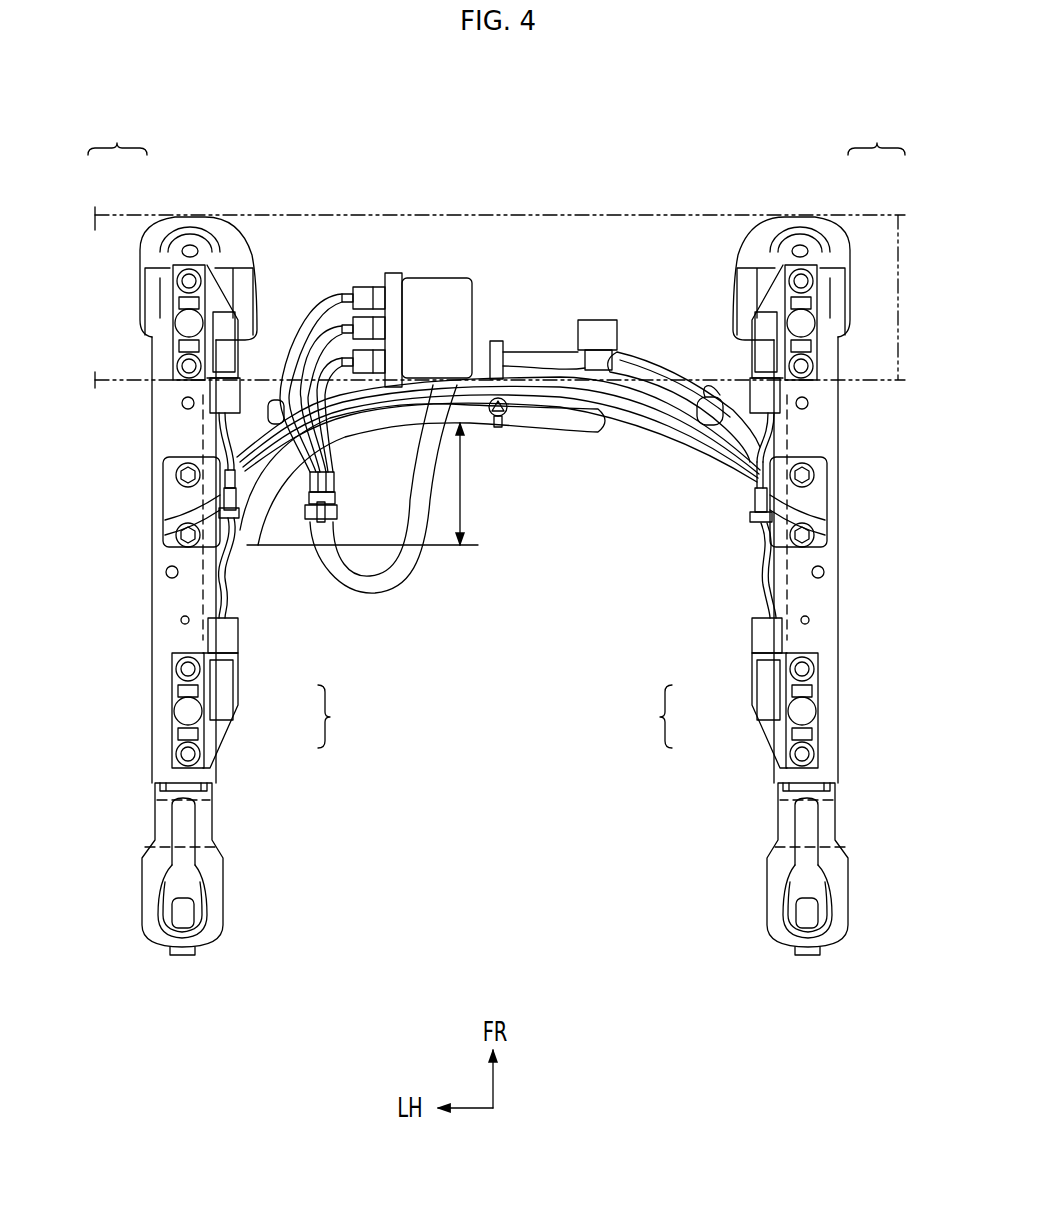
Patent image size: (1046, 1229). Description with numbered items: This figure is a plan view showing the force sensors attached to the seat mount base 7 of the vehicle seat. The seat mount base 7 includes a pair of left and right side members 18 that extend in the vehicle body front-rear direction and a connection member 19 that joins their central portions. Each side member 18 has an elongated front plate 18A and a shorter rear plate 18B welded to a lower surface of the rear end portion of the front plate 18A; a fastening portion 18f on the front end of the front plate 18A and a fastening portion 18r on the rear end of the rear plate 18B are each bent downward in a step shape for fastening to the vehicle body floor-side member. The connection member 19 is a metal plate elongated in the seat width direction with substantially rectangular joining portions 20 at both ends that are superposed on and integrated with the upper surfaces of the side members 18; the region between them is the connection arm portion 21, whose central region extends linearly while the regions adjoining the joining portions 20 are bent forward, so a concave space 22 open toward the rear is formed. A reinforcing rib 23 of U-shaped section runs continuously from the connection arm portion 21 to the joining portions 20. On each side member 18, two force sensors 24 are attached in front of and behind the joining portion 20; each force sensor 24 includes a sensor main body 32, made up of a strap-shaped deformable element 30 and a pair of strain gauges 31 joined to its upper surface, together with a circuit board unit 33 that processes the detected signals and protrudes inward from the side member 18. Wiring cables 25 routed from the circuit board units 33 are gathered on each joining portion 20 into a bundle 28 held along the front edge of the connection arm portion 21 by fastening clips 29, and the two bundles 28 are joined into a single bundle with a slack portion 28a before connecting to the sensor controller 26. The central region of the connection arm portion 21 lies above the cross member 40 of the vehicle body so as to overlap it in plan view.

The seat mount base 7 is at (846, 512).
The side member 18 is at (156, 621).
The front plate 18A is at (172, 595).
The rear plate 18B is at (185, 797).
The fastening portion 18f is at (193, 228).
The fastening portion 18r is at (178, 930).
The connection member 19 is at (660, 450).
The joining portion 20 is at (172, 478).
The connection arm portion 21 is at (648, 372).
The concave space 22 is at (548, 477).
The reinforcing rib 23 is at (767, 470).
The force sensor 24 is at (222, 262).
The wiring cable 25 is at (224, 445).
The sensor controller 26 is at (440, 270).
The bundle 28 is at (596, 320).
The slack portion 28a is at (386, 583).
The fastening clip 29 is at (275, 400).
The deformable element 30 is at (180, 356).
The strain gauge 31 is at (182, 346).
The sensor main body 32 is at (496, 430).
The circuit board unit 33 is at (228, 318).
The cross member 40 is at (690, 215).